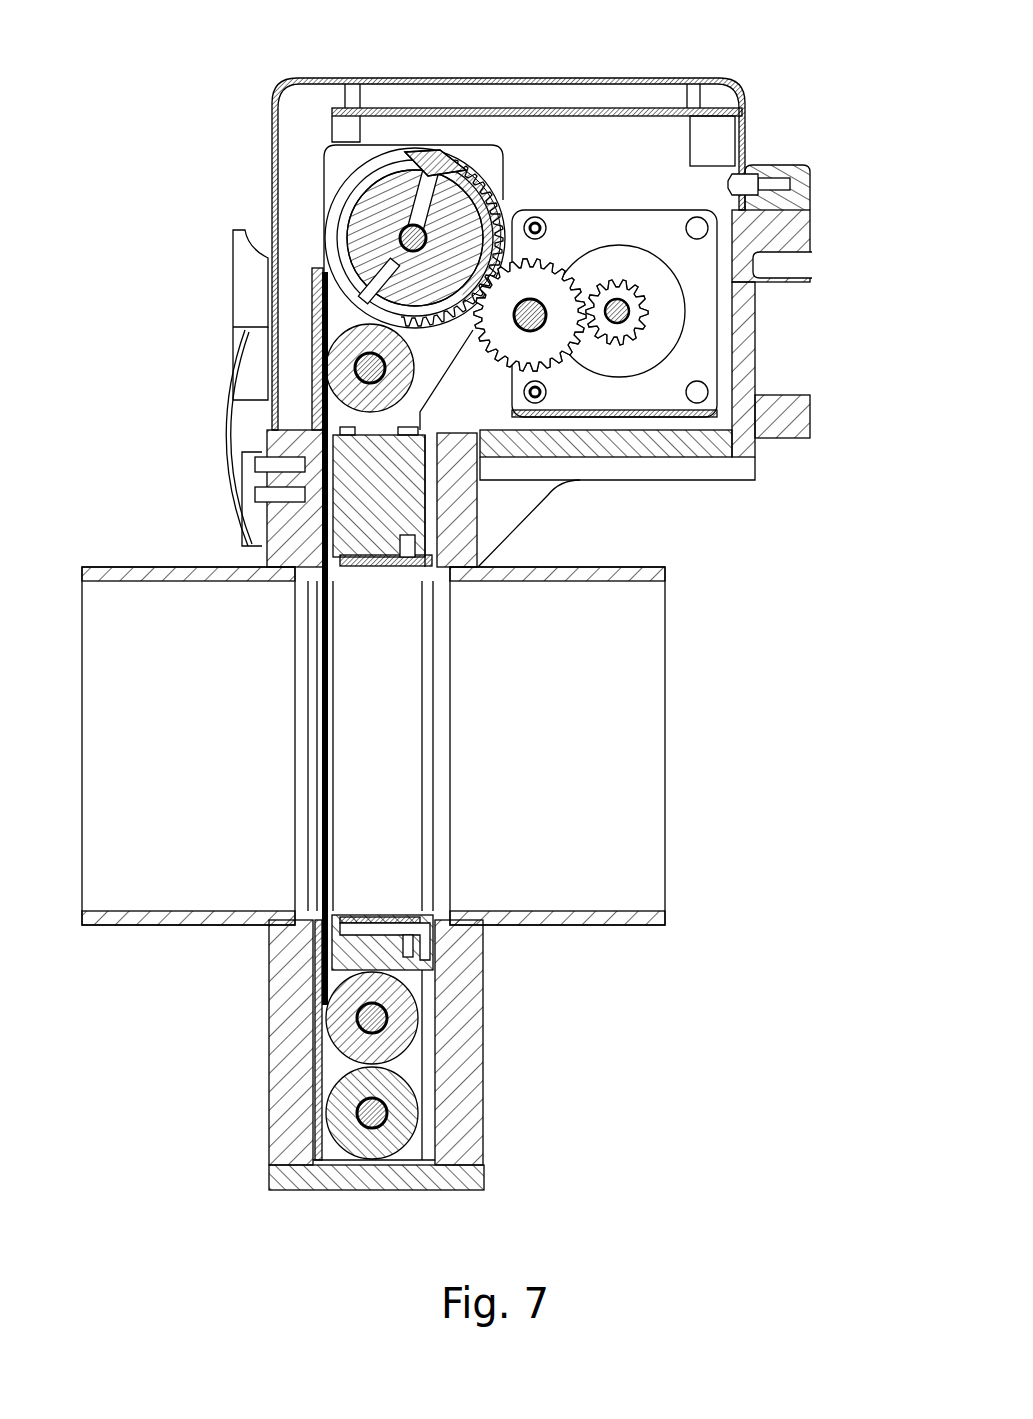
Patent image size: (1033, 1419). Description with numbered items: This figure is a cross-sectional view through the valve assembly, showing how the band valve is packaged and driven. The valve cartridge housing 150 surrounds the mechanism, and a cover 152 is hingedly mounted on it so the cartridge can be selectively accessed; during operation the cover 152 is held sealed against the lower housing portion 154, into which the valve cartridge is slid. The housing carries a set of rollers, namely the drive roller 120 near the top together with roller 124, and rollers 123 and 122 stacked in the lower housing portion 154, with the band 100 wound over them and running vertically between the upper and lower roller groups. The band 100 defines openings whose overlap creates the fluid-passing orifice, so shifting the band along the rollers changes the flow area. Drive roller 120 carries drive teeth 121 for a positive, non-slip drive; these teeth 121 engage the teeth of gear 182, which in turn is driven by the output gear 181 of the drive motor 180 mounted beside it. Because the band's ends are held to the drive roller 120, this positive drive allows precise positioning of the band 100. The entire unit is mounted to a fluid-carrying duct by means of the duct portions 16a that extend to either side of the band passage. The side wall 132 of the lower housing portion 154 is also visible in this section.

The valve cartridge housing 150 is at (712, 48).
The cover 152 is at (748, 128).
The drive roller 120 is at (383, 172).
The drive teeth 121 is at (480, 196).
The roller 124 is at (345, 353).
The drive motor 180 is at (660, 283).
The output gear 181 is at (650, 318).
The gear 182 is at (556, 362).
The duct portions 16a is at (648, 568).
The band 100 is at (320, 760).
The roller 123 is at (340, 1016).
The roller 122 is at (388, 1150).
The housing wall 132 is at (462, 1020).
The lower housing portion 154 is at (425, 1079).